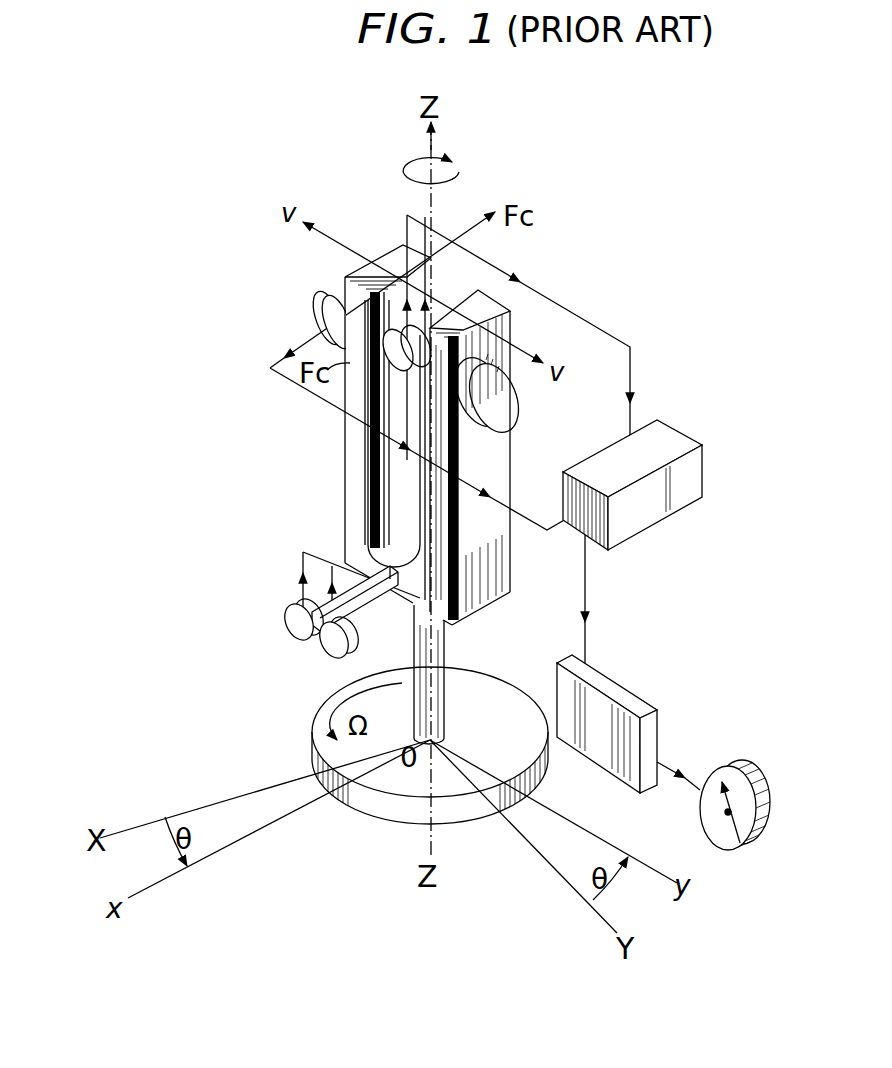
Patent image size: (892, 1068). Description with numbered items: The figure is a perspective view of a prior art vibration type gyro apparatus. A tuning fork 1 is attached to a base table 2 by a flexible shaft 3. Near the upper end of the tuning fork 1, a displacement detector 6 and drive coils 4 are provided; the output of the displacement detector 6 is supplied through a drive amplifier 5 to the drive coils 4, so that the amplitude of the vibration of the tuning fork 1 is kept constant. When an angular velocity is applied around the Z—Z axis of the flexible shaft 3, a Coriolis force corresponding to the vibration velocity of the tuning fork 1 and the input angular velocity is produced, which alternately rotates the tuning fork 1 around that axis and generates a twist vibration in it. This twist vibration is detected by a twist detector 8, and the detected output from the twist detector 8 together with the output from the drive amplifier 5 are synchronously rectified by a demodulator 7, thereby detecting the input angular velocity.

The tuning fork 1 is at (345, 492).
The base table 2 is at (388, 790).
The flexible shaft 3 is at (540, 760).
The drive coils 4 is at (326, 318).
The drive amplifier 5 is at (703, 465).
The displacement detector 6 is at (392, 372).
The demodulator 7 is at (628, 694).
The twist detector 8 is at (286, 640).